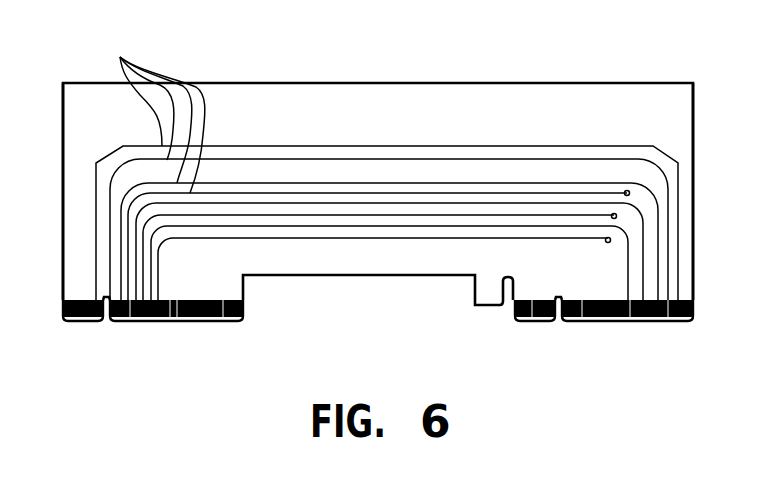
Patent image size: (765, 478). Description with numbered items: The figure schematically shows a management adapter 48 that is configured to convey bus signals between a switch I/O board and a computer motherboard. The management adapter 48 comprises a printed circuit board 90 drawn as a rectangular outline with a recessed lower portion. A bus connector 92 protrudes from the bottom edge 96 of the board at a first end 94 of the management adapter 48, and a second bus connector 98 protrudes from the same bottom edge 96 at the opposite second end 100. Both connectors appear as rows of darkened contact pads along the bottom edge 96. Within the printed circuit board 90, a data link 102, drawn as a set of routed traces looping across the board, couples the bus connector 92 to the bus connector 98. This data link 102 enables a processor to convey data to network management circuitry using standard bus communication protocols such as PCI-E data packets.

The management adapter 48 is at (382, 193).
The printed circuit board 90 is at (523, 95).
The bus connector 92 is at (242, 332).
The first end 94 is at (63, 167).
The bottom edge 96 is at (362, 275).
The bus connector 98 is at (693, 332).
The second end 100 is at (693, 167).
The data link 102 is at (387, 164).